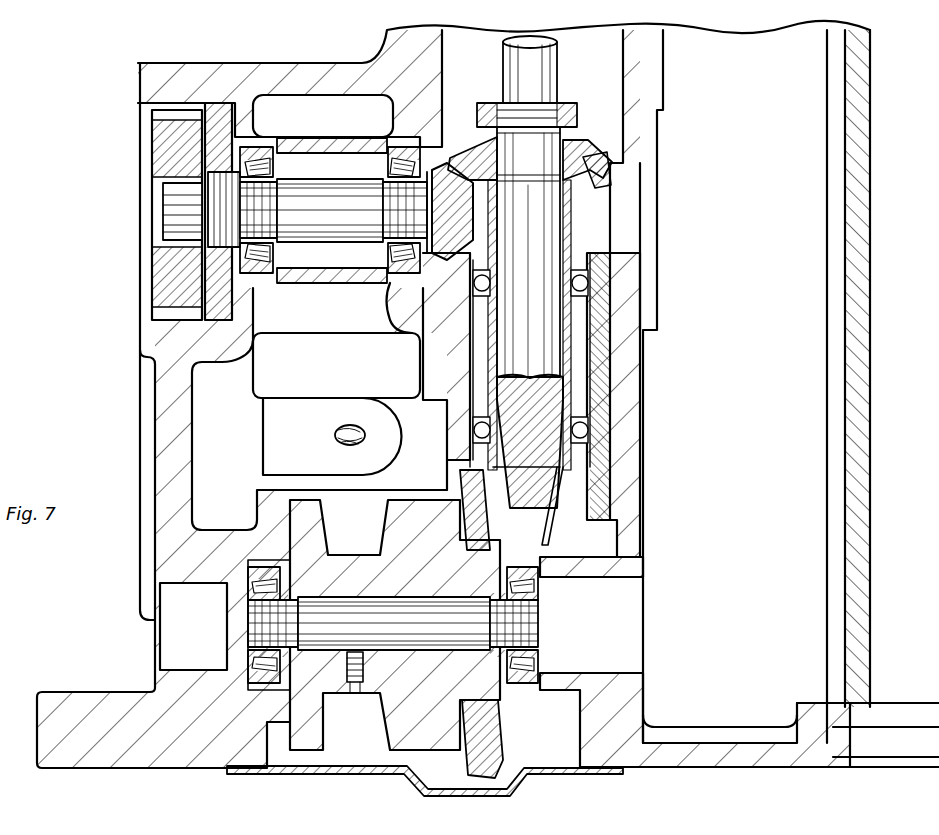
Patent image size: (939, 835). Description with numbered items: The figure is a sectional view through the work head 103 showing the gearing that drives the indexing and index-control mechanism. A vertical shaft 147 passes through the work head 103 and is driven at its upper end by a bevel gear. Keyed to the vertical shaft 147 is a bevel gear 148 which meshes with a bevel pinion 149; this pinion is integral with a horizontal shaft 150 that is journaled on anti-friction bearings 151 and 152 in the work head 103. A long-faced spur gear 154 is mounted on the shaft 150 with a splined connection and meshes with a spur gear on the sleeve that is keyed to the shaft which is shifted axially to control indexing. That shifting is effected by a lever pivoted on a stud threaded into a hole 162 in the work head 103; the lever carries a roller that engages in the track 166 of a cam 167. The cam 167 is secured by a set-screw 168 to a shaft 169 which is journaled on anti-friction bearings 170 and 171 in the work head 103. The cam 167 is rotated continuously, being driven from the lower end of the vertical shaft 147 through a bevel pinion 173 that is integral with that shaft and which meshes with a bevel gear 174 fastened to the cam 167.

The work head 103 is at (167, 420).
The vertical shaft 147 is at (553, 73).
The bevel gear 148 is at (589, 186).
The bevel pinion 149 is at (448, 178).
The shaft 150 is at (331, 190).
The anti-friction bearing 151 is at (385, 288).
The anti-friction bearing 152 is at (273, 285).
The long-faced spur gear 154 is at (163, 271).
The hole 162 is at (352, 428).
The track 166 is at (341, 737).
The cam 167 is at (395, 517).
The set-screw 168 is at (357, 684).
The shaft 169 is at (342, 612).
The anti-friction bearing 170 is at (255, 566).
The anti-friction bearing 171 is at (553, 566).
The bevel pinion 173 is at (562, 490).
The bevel gear 174 is at (498, 772).